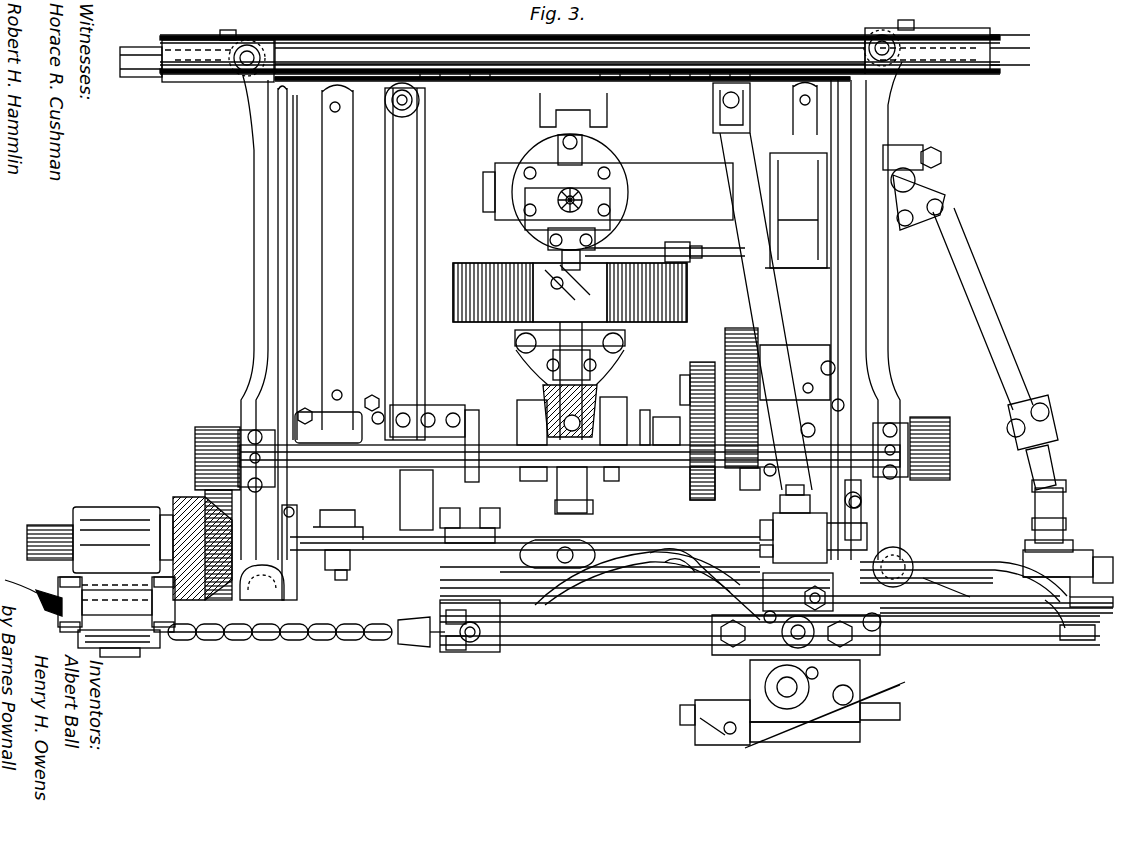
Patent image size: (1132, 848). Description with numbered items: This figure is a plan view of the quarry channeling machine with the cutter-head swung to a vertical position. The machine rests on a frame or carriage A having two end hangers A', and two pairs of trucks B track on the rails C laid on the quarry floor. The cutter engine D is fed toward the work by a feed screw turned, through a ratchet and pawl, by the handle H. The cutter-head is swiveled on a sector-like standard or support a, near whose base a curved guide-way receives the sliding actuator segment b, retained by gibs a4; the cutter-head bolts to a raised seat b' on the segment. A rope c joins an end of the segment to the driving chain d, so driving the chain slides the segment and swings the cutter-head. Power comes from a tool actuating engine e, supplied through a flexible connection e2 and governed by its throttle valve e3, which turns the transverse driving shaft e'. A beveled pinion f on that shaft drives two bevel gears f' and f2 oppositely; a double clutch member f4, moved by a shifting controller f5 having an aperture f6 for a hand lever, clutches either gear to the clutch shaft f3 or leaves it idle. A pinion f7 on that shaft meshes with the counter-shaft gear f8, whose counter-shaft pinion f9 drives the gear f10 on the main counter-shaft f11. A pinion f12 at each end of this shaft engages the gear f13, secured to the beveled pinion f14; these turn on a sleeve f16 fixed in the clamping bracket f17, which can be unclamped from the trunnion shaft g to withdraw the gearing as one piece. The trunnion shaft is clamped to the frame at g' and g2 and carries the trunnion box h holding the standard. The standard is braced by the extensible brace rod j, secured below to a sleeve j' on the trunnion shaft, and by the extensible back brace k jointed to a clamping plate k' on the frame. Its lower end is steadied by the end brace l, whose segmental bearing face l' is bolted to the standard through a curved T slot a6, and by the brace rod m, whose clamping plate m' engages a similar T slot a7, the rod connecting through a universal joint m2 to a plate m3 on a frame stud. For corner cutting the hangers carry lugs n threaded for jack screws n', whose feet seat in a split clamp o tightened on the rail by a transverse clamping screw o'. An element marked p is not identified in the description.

The frame or carriage A is at (580, 225).
The end hangers A' is at (558, 311).
The trucks B is at (325, 60).
The rails C is at (150, 78).
The cutter engine D is at (830, 672).
The handle H is at (705, 582).
The sector-like standard or support a is at (625, 585).
The gibs a4 is at (1033, 617).
The curved T slot a6 is at (530, 570).
The T slot a7 is at (1060, 590).
The actuator segment b is at (770, 656).
The raised seat b' is at (770, 652).
The rope c is at (1105, 557).
The driving chain d is at (282, 632).
The tool actuating engine e is at (614, 201).
The transverse driving shaft e' is at (552, 381).
The flexible connection e2 is at (545, 280).
The throttle valve e3 is at (585, 200).
The beveled pinion f is at (570, 414).
The bevel gear f' is at (622, 413).
The bevel gear f2 is at (545, 396).
The clutch shaft f3 is at (680, 420).
The double clutch member f4 is at (470, 412).
The shifting controller f5 is at (562, 488).
The aperture f6 is at (740, 328).
The pinion f7 is at (755, 470).
The counter-shaft gear f8 is at (610, 482).
The counter-shaft pinion f9 is at (698, 362).
The gear f10 is at (702, 480).
The main counter-shaft f11 is at (490, 468).
The pinion f12 is at (195, 438).
The gear f13 is at (222, 600).
The beveled pinion f14 is at (182, 505).
The sleeve f16 is at (122, 657).
The clamping bracket f17 is at (102, 508).
The trunnion shaft g is at (31, 594).
The clamp g' is at (294, 587).
The clamp g2 is at (860, 528).
The trunnion box h is at (760, 518).
The extensible brace rod j is at (525, 510).
The sleeve j' is at (345, 531).
The extensible back brace k is at (775, 311).
The clamping plate k' is at (709, 108).
The end brace l is at (764, 580).
The segmental bearing face l' is at (532, 607).
The extensible brace rod m is at (995, 349).
The clamping plate m' is at (1064, 516).
The universal joint m2 is at (932, 195).
The plate m3 is at (907, 147).
The lugs n is at (882, 33).
The jack screws n' is at (262, 589).
The split clamp o is at (614, 322).
The transverse clamping screw o' is at (236, 20).
The pin p is at (255, 46).